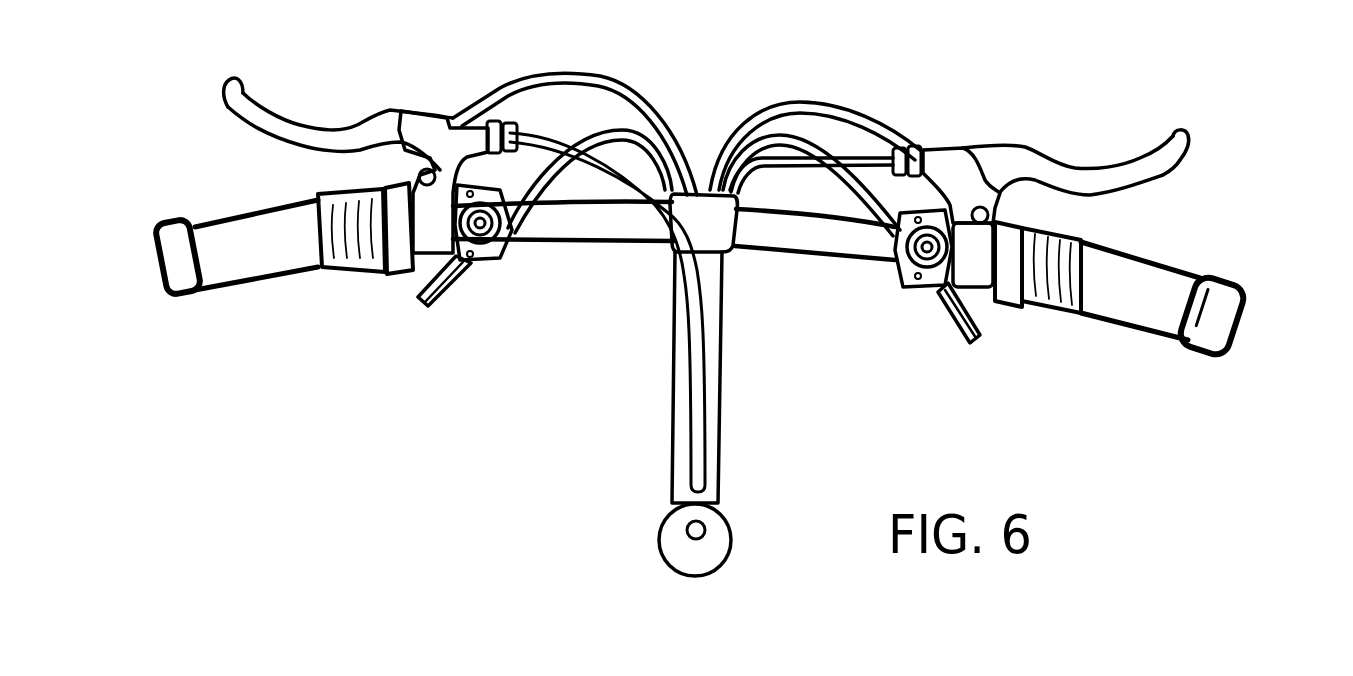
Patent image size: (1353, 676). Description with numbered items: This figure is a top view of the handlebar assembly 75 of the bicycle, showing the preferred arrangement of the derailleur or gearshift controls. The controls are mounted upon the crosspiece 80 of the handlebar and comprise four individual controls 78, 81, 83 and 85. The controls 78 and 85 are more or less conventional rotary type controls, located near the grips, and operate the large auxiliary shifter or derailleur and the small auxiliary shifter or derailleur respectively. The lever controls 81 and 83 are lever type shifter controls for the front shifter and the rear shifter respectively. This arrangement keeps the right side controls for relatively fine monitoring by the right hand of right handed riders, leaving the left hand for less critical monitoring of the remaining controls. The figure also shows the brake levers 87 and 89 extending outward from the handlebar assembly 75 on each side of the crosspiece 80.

The handlebar assembly 75 is at (727, 343).
The rotary type control 78 is at (360, 283).
The crosspiece 80 is at (545, 252).
The lever control 81 is at (465, 300).
The lever control 83 is at (939, 332).
The rotary type control 85 is at (1040, 316).
The left brake lever 87 is at (268, 147).
The right brake lever 89 is at (1187, 183).